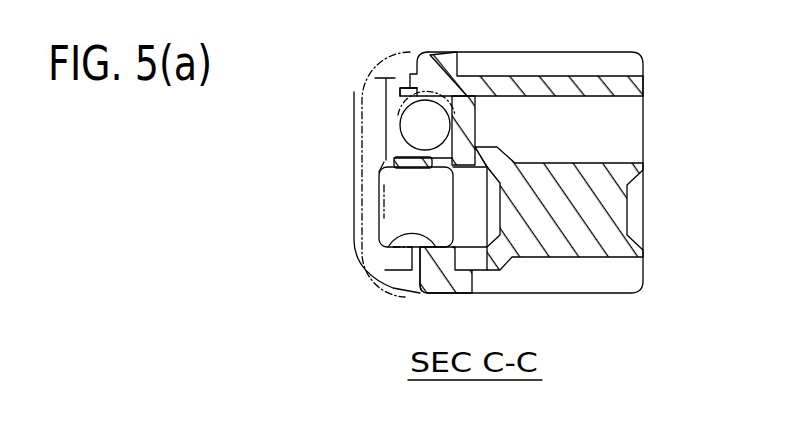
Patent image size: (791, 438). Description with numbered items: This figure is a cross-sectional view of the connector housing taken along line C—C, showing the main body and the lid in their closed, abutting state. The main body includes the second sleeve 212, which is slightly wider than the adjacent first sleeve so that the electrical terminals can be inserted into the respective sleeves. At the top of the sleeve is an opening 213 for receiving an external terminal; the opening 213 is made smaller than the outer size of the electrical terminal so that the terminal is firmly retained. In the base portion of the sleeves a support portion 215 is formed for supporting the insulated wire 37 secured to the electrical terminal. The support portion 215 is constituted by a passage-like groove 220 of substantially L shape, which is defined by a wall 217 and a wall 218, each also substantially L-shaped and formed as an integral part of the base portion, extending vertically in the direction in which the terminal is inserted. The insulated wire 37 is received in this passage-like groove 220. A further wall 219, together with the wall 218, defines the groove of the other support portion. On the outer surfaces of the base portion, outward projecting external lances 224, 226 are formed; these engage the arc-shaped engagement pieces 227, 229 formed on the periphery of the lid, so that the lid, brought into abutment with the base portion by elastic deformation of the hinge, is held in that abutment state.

The insulated wire 37 is at (390, 136).
The second sleeve 212 is at (388, 218).
The opening 213 is at (633, 204).
The support portion 215 is at (395, 156).
The wall 217 is at (400, 100).
The wall 218 is at (383, 168).
The wall 219 is at (404, 250).
The passage-like groove 220 is at (392, 130).
The external lance 224 is at (426, 54).
The external lance 226 is at (420, 295).
The engagement piece 227 is at (492, 60).
The engagement piece 229 is at (488, 280).